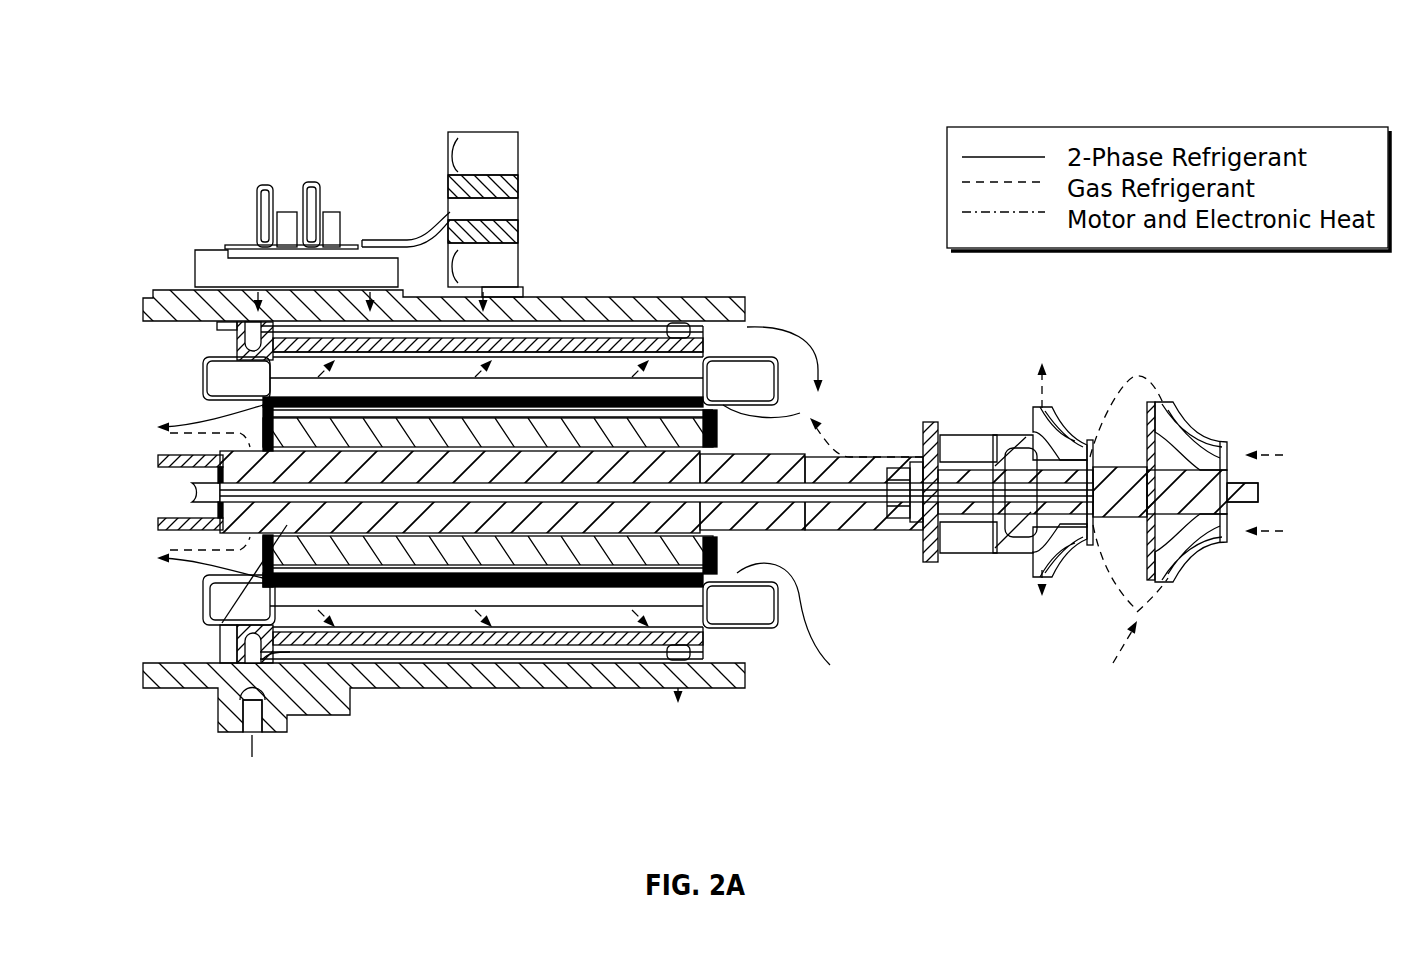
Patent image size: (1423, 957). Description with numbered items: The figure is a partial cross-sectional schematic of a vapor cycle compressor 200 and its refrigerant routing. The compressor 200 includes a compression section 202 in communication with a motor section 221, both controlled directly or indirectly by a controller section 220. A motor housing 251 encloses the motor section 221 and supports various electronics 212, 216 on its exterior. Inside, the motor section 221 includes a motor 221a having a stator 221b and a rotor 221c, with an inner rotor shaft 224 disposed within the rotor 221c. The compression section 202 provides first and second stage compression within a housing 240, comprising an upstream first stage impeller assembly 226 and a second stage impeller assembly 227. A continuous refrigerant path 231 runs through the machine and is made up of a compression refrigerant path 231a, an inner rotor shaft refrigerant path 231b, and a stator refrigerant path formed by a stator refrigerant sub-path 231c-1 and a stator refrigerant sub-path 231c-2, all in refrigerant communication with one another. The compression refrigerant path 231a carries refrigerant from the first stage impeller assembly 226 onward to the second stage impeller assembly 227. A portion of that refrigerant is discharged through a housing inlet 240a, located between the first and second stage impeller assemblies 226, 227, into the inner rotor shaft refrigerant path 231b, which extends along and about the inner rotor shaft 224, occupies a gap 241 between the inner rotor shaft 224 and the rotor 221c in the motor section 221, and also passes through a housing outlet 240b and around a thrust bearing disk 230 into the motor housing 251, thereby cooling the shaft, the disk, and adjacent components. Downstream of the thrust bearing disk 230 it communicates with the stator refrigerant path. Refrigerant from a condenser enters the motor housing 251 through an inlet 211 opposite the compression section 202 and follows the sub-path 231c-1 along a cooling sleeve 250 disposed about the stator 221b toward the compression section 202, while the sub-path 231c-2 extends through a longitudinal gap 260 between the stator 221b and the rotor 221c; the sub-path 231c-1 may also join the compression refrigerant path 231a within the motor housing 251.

The vapor cycle compressor 200 is at (689, 67).
The controller section 220 is at (375, 112).
The electronics 216 is at (267, 185).
The electronics 212 is at (483, 150).
The motor section 221 is at (641, 270).
The motor 221a is at (130, 385).
The stator 221b is at (276, 583).
The rotor 221c is at (290, 530).
The motor housing 251 is at (218, 383).
The inner rotor shaft 224 is at (290, 495).
The gap 241 is at (622, 487).
The longitudinal gap 260 is at (222, 625).
The inlet 211 is at (228, 707).
The stator refrigerant sub-path 231c-1 is at (430, 655).
The stator refrigerant sub-path 231c-2 is at (815, 595).
The cooling sleeve 250 is at (530, 647).
The compression section 202 is at (1058, 311).
The thrust bearing disk 230 is at (928, 440).
The inner rotor shaft refrigerant path 231b is at (972, 478).
The housing outlet 240b is at (940, 560).
The housing 240 is at (1017, 548).
The housing inlet 240a is at (1093, 553).
The second stage impeller assembly 227 is at (1053, 585).
The first stage impeller assembly 226 is at (1190, 560).
The compression refrigerant path 231a is at (1133, 370).
The continuous refrigerant path 231 is at (1297, 453).